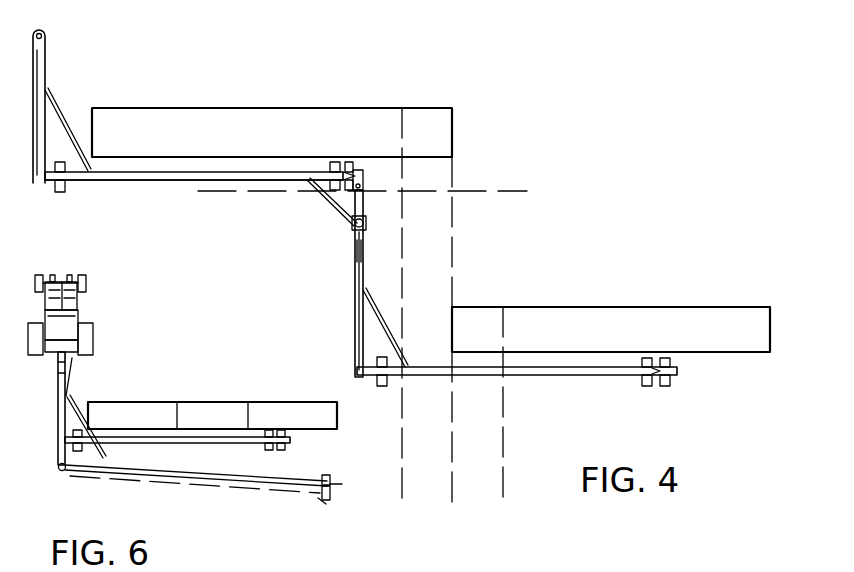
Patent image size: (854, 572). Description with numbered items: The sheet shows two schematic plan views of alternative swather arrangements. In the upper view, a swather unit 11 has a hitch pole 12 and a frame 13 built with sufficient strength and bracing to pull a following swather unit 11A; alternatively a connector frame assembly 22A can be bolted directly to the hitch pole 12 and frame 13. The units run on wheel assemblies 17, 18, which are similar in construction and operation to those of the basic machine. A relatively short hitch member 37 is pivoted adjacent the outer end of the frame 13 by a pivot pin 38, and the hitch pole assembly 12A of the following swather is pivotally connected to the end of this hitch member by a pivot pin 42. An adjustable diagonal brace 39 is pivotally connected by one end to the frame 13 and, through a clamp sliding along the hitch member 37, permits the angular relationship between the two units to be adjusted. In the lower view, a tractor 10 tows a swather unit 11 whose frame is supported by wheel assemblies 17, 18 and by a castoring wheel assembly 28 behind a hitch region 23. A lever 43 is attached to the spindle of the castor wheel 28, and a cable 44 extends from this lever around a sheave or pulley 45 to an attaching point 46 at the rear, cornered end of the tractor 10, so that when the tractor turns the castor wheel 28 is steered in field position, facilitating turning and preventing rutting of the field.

In FIG. 6, the tractor 10 is at (86, 292).
In FIG. 4, the swather unit 11 is at (270, 108).
In FIG. 6, the swather unit 11 is at (248, 402).
In FIG. 4, the following swather unit 11A is at (568, 307).
In FIG. 4, the hitch pole 12 is at (43, 46).
In FIG. 4, the hitch pole assembly of following swather 12A is at (364, 280).
In FIG. 4, the frame 13 is at (182, 176).
In FIG. 4, the wheel assembly 17 is at (350, 162).
In FIG. 6, the wheel assembly 17 is at (287, 445).
In FIG. 4, the wheel assembly 18 is at (63, 199).
In FIG. 6, the wheel assembly 18 is at (86, 444).
In FIG. 4, the connector frame assembly 22A is at (150, 182).
In FIG. 6, the hitch 23 is at (58, 393).
In FIG. 6, the castoring wheel assembly 28 is at (322, 502).
In FIG. 4, the hitch member 37 is at (365, 212).
In FIG. 4, the pivot pin 38 is at (365, 190).
In FIG. 4, the adjustable diagonal brace 39 is at (338, 213).
In FIG. 4, the pivot pin 42 is at (362, 256).
In FIG. 6, the lever 43 is at (330, 488).
In FIG. 6, the cable 44 is at (178, 484).
In FIG. 6, the sheave or pulley 45 is at (63, 471).
In FIG. 6, the attaching point 46 is at (80, 336).